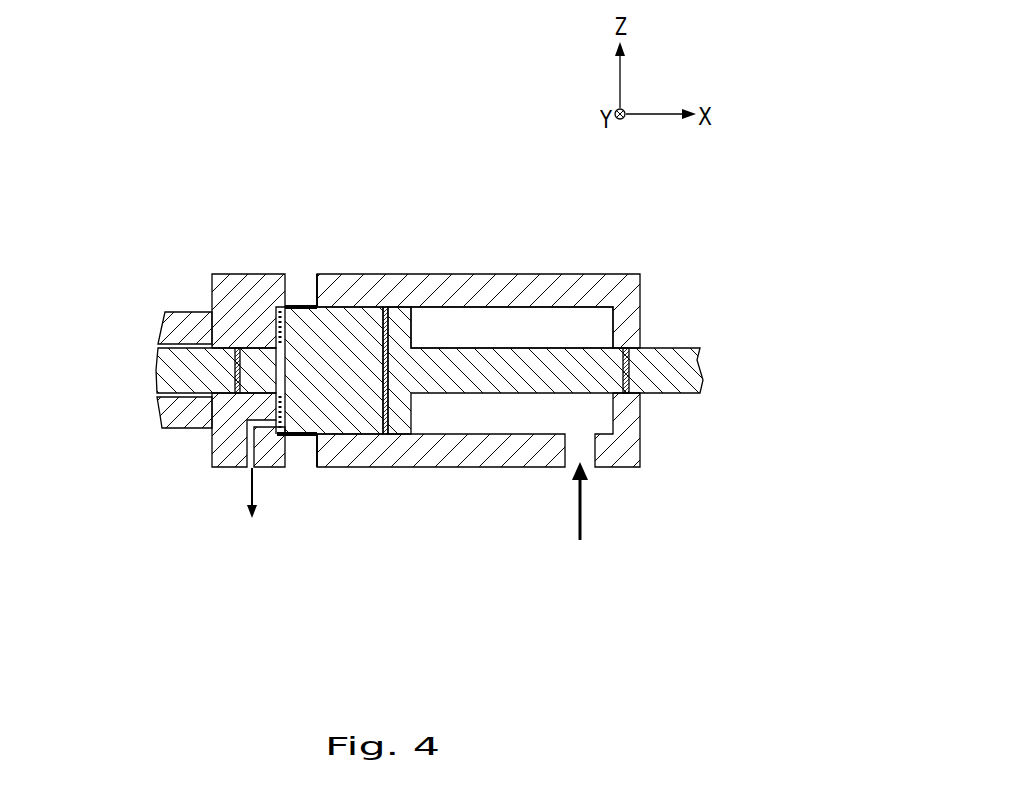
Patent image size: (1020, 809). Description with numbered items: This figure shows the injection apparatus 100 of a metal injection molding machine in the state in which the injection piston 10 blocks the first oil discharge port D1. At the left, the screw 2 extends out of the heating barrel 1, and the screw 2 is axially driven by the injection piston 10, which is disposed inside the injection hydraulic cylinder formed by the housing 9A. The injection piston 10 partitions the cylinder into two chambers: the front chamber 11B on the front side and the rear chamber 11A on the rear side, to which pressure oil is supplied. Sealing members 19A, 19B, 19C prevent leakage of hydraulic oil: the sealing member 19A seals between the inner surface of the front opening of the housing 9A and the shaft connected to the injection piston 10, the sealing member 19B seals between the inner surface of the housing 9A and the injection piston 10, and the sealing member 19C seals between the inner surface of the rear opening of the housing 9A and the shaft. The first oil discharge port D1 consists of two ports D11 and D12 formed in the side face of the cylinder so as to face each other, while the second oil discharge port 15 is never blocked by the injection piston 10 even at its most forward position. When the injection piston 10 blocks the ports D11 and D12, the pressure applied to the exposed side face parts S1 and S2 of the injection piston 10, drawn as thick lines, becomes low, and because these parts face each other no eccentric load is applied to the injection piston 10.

The injection apparatus 100 is at (396, 106).
The heating barrel 1 is at (168, 312).
The screw 2 is at (153, 350).
The housing 9A is at (540, 273).
The injection piston 10 is at (676, 352).
The rear chamber 11A is at (573, 325).
The front chamber 11B is at (283, 307).
The second oil discharge port 15 is at (241, 481).
The sealing member 19A is at (237, 395).
The sealing member 19B is at (388, 306).
The sealing member 19C is at (629, 391).
The side face part S1 is at (302, 437).
The side face part S2 is at (305, 303).
The first oil discharge port D11 is at (316, 474).
The first oil discharge port D12 is at (322, 271).
The first oil discharge port D1 is at (95, 587).